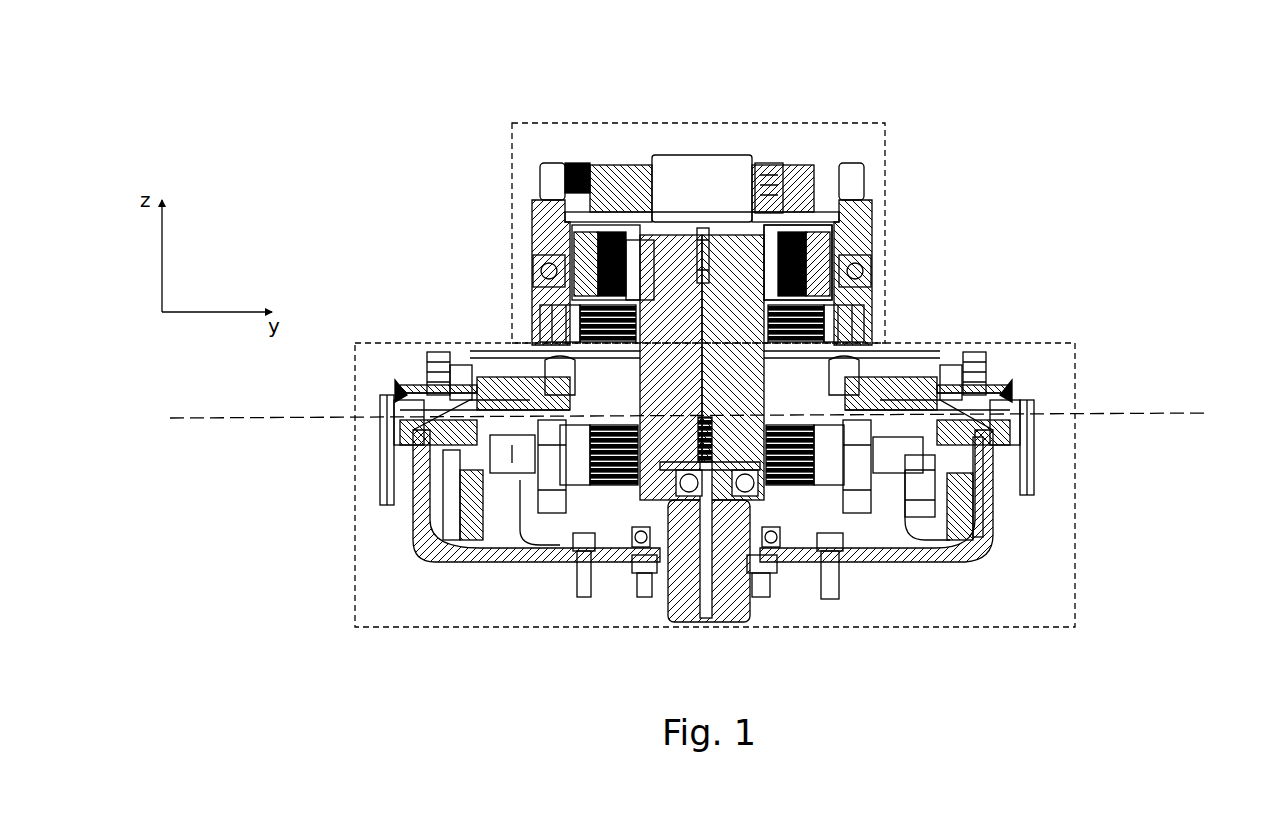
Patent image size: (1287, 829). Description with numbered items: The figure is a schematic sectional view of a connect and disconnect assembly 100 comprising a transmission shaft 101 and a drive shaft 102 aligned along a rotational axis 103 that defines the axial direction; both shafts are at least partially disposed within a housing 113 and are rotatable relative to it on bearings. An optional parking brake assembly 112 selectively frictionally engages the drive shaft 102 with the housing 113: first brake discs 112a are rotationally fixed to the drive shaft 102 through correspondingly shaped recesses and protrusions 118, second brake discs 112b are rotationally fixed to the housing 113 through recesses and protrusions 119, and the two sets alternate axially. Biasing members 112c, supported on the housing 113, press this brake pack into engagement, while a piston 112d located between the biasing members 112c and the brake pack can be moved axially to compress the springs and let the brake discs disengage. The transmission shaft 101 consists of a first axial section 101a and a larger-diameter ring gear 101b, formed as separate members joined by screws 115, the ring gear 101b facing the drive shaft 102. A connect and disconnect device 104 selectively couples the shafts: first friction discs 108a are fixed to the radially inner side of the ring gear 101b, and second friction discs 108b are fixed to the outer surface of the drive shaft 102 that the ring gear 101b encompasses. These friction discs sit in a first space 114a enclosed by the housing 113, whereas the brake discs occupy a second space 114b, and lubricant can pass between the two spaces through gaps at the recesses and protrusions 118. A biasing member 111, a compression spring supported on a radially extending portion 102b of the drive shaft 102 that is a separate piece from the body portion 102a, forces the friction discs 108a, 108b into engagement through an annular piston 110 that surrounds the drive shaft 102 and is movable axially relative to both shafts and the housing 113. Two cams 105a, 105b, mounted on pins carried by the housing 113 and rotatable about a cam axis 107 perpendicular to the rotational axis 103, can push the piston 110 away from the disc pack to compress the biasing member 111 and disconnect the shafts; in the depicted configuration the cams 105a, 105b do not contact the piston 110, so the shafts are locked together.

The connect and disconnect assembly 100 is at (335, 187).
The transmission shaft 101 is at (686, 605).
The first axial section 101a is at (637, 580).
The ring gear 101b is at (995, 380).
The drive shaft 102 is at (625, 358).
The body portion 102a is at (580, 388).
The radially extending portion 102b is at (866, 385).
The rotational axis 103 is at (697, 178).
The connect and disconnect device 104 is at (1077, 367).
The cam 105a is at (382, 470).
The cam 105b is at (1030, 460).
The cam axis 107 is at (1192, 413).
The first friction discs 108a is at (870, 485).
The second friction discs 108b is at (860, 510).
The piston 110 is at (908, 383).
The biasing member 111 is at (872, 337).
The parking brake assembly 112 is at (833, 122).
The first brake discs 112a is at (532, 270).
The second brake discs 112b is at (872, 302).
The biasing members 112c is at (560, 180).
The piston 112d is at (873, 258).
The housing 113 is at (872, 200).
The first space 114a is at (820, 505).
The second space 114b is at (757, 173).
The screws 115 is at (533, 508).
The recesses and protrusions 118 is at (633, 303).
The recesses and protrusions 119 is at (532, 312).